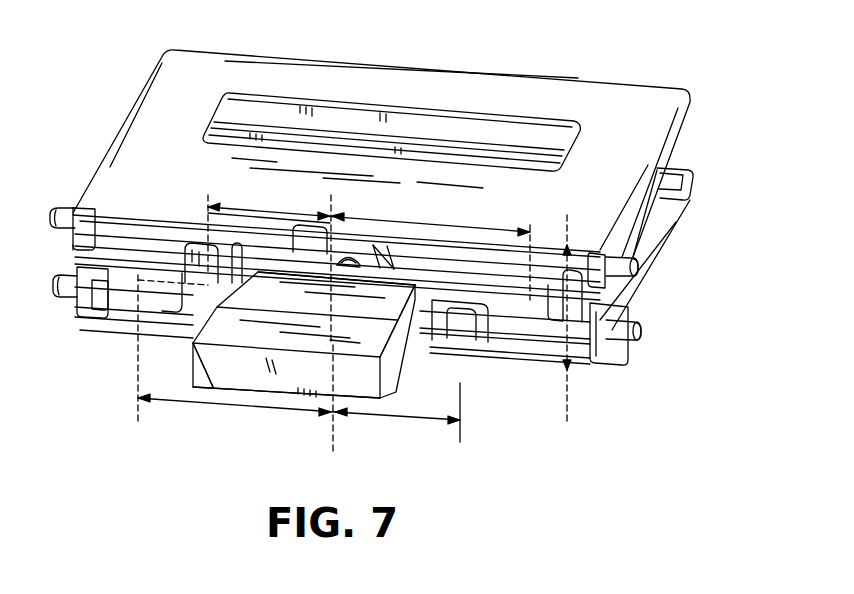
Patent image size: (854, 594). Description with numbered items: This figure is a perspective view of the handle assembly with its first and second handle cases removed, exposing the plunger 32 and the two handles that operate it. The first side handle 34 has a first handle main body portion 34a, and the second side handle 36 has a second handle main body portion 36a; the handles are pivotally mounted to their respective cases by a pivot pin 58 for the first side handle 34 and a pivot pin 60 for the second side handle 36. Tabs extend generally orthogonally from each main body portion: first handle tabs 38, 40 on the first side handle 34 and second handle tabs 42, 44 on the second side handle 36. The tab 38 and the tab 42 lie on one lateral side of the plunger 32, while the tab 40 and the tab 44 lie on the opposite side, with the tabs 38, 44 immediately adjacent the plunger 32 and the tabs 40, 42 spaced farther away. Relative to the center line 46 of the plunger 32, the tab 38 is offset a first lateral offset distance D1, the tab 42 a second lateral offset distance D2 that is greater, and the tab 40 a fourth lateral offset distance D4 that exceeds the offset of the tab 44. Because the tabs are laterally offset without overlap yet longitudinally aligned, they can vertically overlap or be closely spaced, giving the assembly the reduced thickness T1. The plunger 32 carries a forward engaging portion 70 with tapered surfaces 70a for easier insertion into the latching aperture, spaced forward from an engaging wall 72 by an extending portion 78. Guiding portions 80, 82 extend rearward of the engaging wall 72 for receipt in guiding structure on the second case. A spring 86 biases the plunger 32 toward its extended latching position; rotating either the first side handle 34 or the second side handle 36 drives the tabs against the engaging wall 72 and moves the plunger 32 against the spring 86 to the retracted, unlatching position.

The first side handle 34 is at (657, 88).
The first handle main body portion 34a is at (560, 98).
The second side handle 36 is at (676, 230).
The second handle main body portion 36a is at (660, 211).
The engaging wall 72 is at (123, 217).
The second handle tab 42 is at (117, 293).
The pivot pin 58 is at (620, 275).
The pivot pin 60 is at (620, 338).
The first handle tab 38 is at (193, 253).
The first handle tab 40 is at (548, 297).
The second handle tab 44 is at (473, 317).
The forward engaging portion 70 is at (213, 333).
The tapered surfaces 70a is at (348, 372).
The plunger 32 is at (330, 298).
The center line 46 is at (255, 425).
The extending portion 78 is at (382, 298).
The guiding portion 80 is at (292, 240).
The spring 86 is at (378, 258).
The guiding portion 82 is at (407, 260).
The first lateral offset distance D1 is at (240, 207).
The second lateral offset distance D2 is at (195, 407).
The fourth lateral offset distance D4 is at (462, 225).
The thickness T1 is at (567, 412).